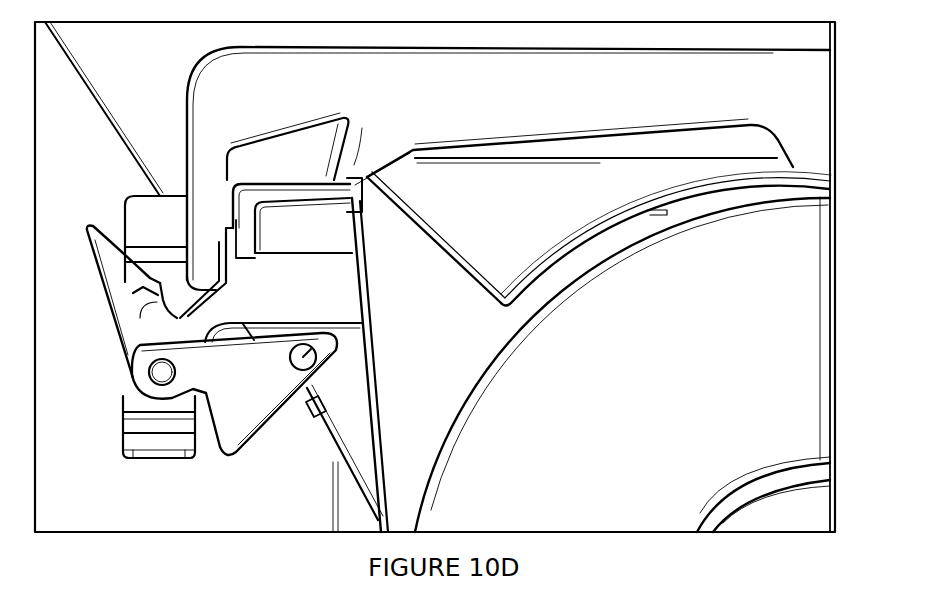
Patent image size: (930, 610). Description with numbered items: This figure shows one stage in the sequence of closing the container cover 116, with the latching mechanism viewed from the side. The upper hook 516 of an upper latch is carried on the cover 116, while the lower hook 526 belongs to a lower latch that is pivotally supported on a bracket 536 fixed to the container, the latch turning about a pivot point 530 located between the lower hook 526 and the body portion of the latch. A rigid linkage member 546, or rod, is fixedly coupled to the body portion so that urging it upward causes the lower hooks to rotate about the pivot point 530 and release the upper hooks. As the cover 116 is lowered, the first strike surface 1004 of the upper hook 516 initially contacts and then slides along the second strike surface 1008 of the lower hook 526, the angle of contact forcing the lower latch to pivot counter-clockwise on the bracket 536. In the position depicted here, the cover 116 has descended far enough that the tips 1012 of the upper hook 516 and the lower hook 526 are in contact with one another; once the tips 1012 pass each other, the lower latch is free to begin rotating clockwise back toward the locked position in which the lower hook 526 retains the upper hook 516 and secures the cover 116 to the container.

The cover 116 is at (457, 180).
The tips 1012 is at (160, 290).
The second strike surface 1008 is at (127, 222).
The bracket 536 is at (333, 288).
The lower hook 526 is at (152, 288).
The first strike surface 1004 is at (177, 318).
The upper hook 516 is at (140, 347).
The pivot point 530 is at (163, 372).
The linkage member 546 is at (307, 362).